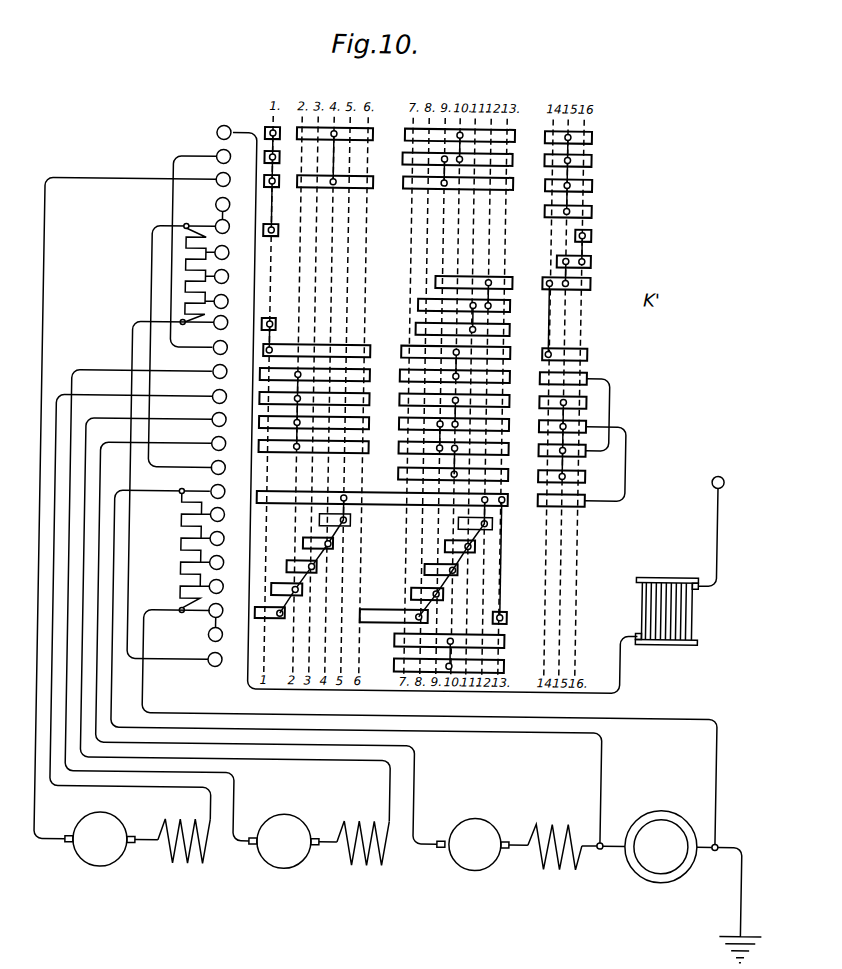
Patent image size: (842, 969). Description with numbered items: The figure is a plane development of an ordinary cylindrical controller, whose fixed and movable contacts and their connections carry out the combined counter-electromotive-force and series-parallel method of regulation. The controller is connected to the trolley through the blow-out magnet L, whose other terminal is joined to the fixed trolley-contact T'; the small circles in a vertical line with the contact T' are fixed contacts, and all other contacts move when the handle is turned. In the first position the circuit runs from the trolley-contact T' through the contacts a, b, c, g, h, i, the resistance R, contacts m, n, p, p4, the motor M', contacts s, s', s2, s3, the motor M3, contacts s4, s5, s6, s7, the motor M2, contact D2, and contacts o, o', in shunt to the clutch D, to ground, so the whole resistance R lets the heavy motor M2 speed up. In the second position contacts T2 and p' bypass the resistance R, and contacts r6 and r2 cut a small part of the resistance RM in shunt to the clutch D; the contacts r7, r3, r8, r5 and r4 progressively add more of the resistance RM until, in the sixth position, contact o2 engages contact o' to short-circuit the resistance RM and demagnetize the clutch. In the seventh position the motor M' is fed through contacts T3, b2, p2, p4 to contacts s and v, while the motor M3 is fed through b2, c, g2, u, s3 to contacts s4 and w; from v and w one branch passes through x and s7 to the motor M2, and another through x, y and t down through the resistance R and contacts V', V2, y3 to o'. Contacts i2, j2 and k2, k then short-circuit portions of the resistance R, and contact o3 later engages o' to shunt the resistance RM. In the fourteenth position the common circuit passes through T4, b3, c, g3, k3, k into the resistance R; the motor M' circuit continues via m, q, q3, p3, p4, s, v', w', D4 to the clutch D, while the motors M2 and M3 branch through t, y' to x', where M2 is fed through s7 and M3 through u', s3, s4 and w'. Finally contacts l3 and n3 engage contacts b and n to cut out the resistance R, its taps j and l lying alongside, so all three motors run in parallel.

The fixed trolley-contact T' is at (473, 350).
The blow-out magnet L is at (688, 610).
The contact c is at (206, 247).
The contact p4 is at (142, 504).
The contact q is at (229, 207).
The contact m is at (198, 343).
The resistance R is at (203, 242).
The contact b is at (253, 204).
The contact k is at (228, 276).
The contact j is at (225, 301).
The contact i is at (182, 486).
The contact l is at (225, 346).
The contact s3 is at (160, 601).
The contact s is at (145, 602).
The contact s4 is at (237, 616).
The contact s7 is at (269, 639).
The contact t is at (223, 467).
The clutch D is at (660, 884).
The resistance RM is at (195, 568).
The contact r5 is at (351, 513).
The contact r4 is at (225, 538).
The contact r3 is at (225, 562).
The contact r2 is at (224, 586).
The contact o' is at (429, 723).
The contact y3 is at (225, 634).
The contact y is at (358, 567).
The contact a is at (277, 176).
The contact p is at (277, 181).
The contact n is at (276, 231).
The contact h is at (273, 333).
The contact T2 is at (369, 134).
The contact p' is at (343, 184).
The contact g is at (309, 351).
The contact s2 is at (307, 406).
The contact s' is at (307, 398).
The contact s5 is at (307, 422).
The contact s6 is at (306, 446).
The contact D2 is at (374, 495).
The contact o is at (292, 562).
The contact r6 is at (353, 584).
The contact r7 is at (368, 560).
The contact r8 is at (385, 536).
The contact T3 is at (509, 134).
The contact b2 is at (467, 168).
The contact p2 is at (467, 185).
The contact k2 is at (483, 290).
The contact j2 is at (471, 314).
The contact i2 is at (469, 330).
The contact g2 is at (464, 362).
The contact u is at (447, 376).
The contact v is at (447, 408).
The contact w is at (446, 432).
The contact x is at (446, 457).
The contact o2 is at (422, 562).
The contact o3 is at (511, 563).
The contact V2 is at (437, 648).
The contact V' is at (436, 664).
The contact T4 is at (590, 135).
The contact b3 is at (577, 161).
The contact p3 is at (578, 186).
The contact q3 is at (578, 211).
The contact n3 is at (592, 245).
The contact l3 is at (580, 268).
The contact k3 is at (574, 315).
The contact g3 is at (575, 356).
The contact u' is at (566, 411).
The contact v' is at (553, 436).
The contact w' is at (573, 460).
The contact x' is at (552, 451).
The contact y' is at (552, 476).
The contact D4 is at (557, 512).
The motor M' is at (137, 847).
The motor M3 is at (296, 852).
The motor M2 is at (488, 853).